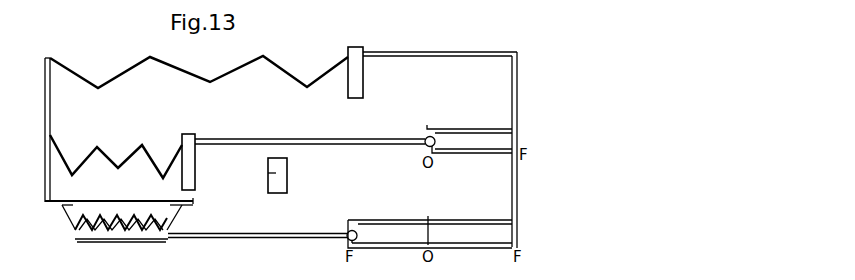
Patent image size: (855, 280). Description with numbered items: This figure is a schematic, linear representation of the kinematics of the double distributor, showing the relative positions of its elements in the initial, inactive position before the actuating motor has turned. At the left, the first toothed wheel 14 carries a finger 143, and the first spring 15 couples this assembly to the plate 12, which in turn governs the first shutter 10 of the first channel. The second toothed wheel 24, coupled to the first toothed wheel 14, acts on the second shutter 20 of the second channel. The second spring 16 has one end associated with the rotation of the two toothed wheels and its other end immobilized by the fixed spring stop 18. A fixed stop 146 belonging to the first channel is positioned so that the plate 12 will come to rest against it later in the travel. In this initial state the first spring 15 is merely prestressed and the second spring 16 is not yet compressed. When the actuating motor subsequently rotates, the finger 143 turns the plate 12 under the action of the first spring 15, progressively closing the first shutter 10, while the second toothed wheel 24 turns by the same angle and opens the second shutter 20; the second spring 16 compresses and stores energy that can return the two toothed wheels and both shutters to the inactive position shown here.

The finger 143 is at (45, 112).
The second spring 16 is at (133, 63).
The fixed spring stop 18 is at (355, 48).
The first spring 15 is at (107, 158).
The plate 12 is at (189, 134).
The first shutter 10 is at (436, 137).
The fixed stop 146 is at (268, 173).
The first toothed wheel 14 is at (70, 210).
The second toothed wheel 24 is at (76, 232).
The second shutter 20 is at (356, 231).